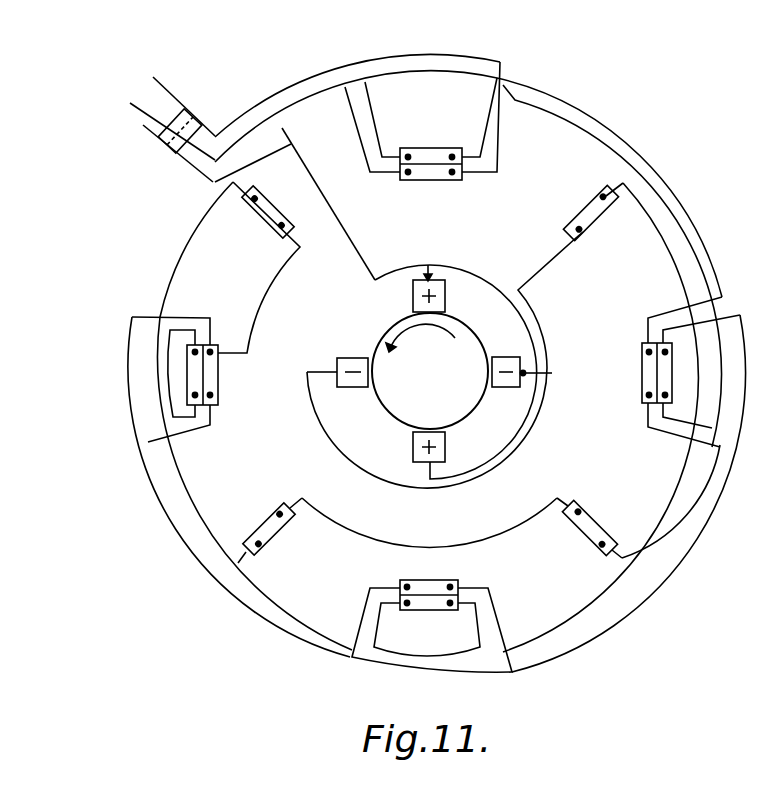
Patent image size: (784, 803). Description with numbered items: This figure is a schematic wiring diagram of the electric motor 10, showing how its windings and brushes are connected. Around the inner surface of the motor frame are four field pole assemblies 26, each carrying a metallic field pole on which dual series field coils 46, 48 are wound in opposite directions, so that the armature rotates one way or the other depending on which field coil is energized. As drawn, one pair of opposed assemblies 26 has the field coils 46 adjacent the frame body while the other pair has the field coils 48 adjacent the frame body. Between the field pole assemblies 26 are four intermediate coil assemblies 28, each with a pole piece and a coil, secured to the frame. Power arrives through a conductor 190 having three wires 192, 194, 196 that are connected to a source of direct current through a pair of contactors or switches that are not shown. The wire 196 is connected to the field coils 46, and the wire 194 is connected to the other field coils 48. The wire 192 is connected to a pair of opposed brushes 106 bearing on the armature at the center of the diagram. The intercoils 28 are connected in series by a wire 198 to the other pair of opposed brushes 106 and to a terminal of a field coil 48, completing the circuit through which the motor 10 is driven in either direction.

The electric motor 10 is at (600, 78).
The field pole assembly 26 is at (424, 145).
The intermediate coil assembly 28 is at (592, 206).
The field coil 46 is at (432, 148).
The field coil 48 is at (438, 180).
The brush 106 is at (446, 298).
The conductor 190 is at (130, 108).
The wire 192 is at (160, 136).
The wire 194 is at (143, 92).
The wire 196 is at (157, 83).
The wire 198 is at (554, 259).